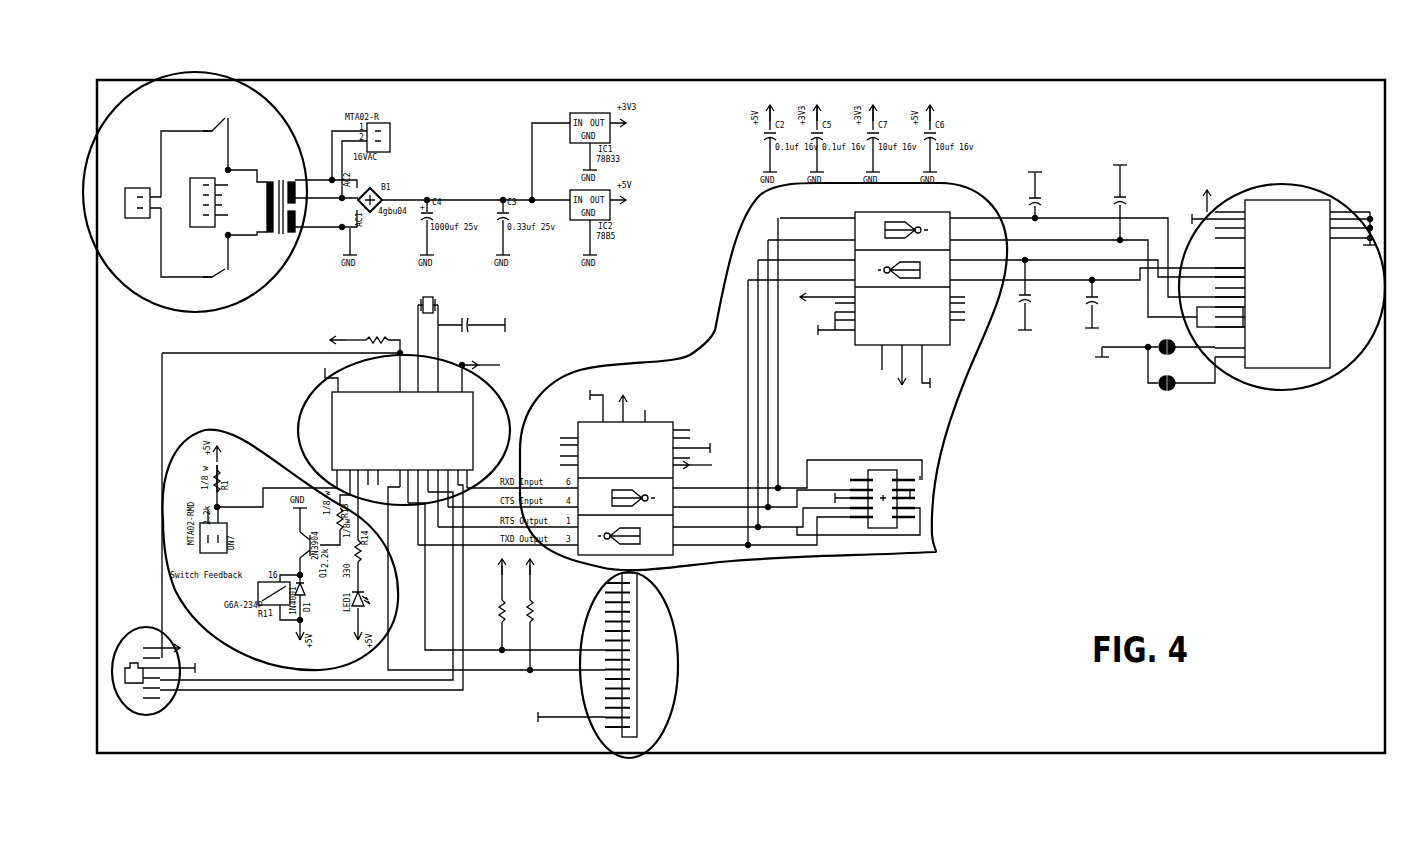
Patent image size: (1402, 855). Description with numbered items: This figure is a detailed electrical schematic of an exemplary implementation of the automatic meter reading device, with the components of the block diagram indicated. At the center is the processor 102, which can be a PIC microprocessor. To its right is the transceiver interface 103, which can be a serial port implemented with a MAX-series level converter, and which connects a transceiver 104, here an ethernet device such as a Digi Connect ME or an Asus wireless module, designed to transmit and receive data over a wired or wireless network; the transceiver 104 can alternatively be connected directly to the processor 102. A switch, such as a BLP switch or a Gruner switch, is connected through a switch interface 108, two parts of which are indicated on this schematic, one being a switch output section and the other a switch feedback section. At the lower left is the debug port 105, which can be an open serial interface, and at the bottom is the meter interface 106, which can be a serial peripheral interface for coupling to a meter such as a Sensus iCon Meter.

The processor 102 is at (499, 397).
The transceiver interface 103 is at (978, 584).
The transceiver 104 is at (1321, 184).
The debug port 105 is at (172, 744).
The meter interface 106 is at (722, 671).
The switch interface 108 is at (216, 66).